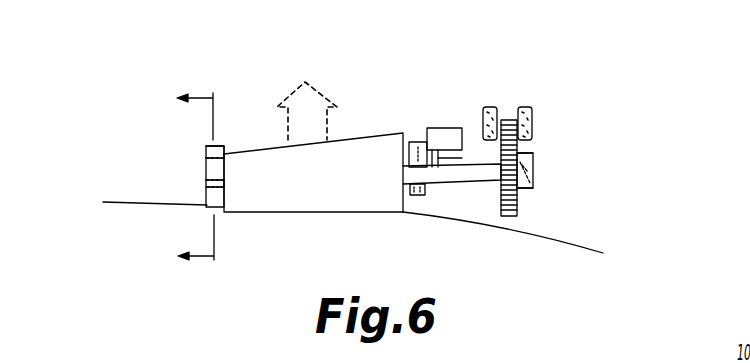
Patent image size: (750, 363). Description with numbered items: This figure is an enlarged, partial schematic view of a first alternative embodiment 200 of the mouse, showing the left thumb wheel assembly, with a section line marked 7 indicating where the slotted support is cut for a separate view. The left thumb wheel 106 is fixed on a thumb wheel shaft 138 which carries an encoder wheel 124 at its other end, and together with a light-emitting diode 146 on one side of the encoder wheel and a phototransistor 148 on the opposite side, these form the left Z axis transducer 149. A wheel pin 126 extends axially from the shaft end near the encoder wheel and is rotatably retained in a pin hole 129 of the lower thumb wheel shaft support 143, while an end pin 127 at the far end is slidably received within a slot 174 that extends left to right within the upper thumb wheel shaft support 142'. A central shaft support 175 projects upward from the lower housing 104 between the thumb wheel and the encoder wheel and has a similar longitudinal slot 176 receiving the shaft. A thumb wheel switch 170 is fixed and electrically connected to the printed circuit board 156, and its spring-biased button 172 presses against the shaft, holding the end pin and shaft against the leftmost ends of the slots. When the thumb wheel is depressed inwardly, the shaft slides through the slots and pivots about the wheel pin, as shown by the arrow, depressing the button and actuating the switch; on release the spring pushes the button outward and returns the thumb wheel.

The section line 7- 7 is at (195, 178).
The lower housing 104 is at (568, 247).
The left thumb wheel 106 is at (307, 198).
The encoder wheel 124 is at (515, 218).
The wheel pin 126 is at (542, 167).
The end pin 127 is at (206, 183).
The pin hole 129 is at (533, 186).
The thumb wheel shaft 138 is at (467, 173).
The upper thumb wheel shaft support 142' is at (173, 199).
The lower thumb wheel shaft support 143 is at (532, 152).
The light-emitting diode 146 is at (490, 107).
The phototransistor 148 is at (527, 105).
The left Z axis transducer 149 is at (492, 191).
The printed circuit board 156 is at (585, 225).
The thumb wheel switch 170 is at (445, 128).
The button 172 is at (462, 158).
The slot 174 is at (206, 160).
The central shaft support 175 is at (421, 197).
The slot 176 is at (407, 139).
The first alternative embodiment 200 is at (653, 97).